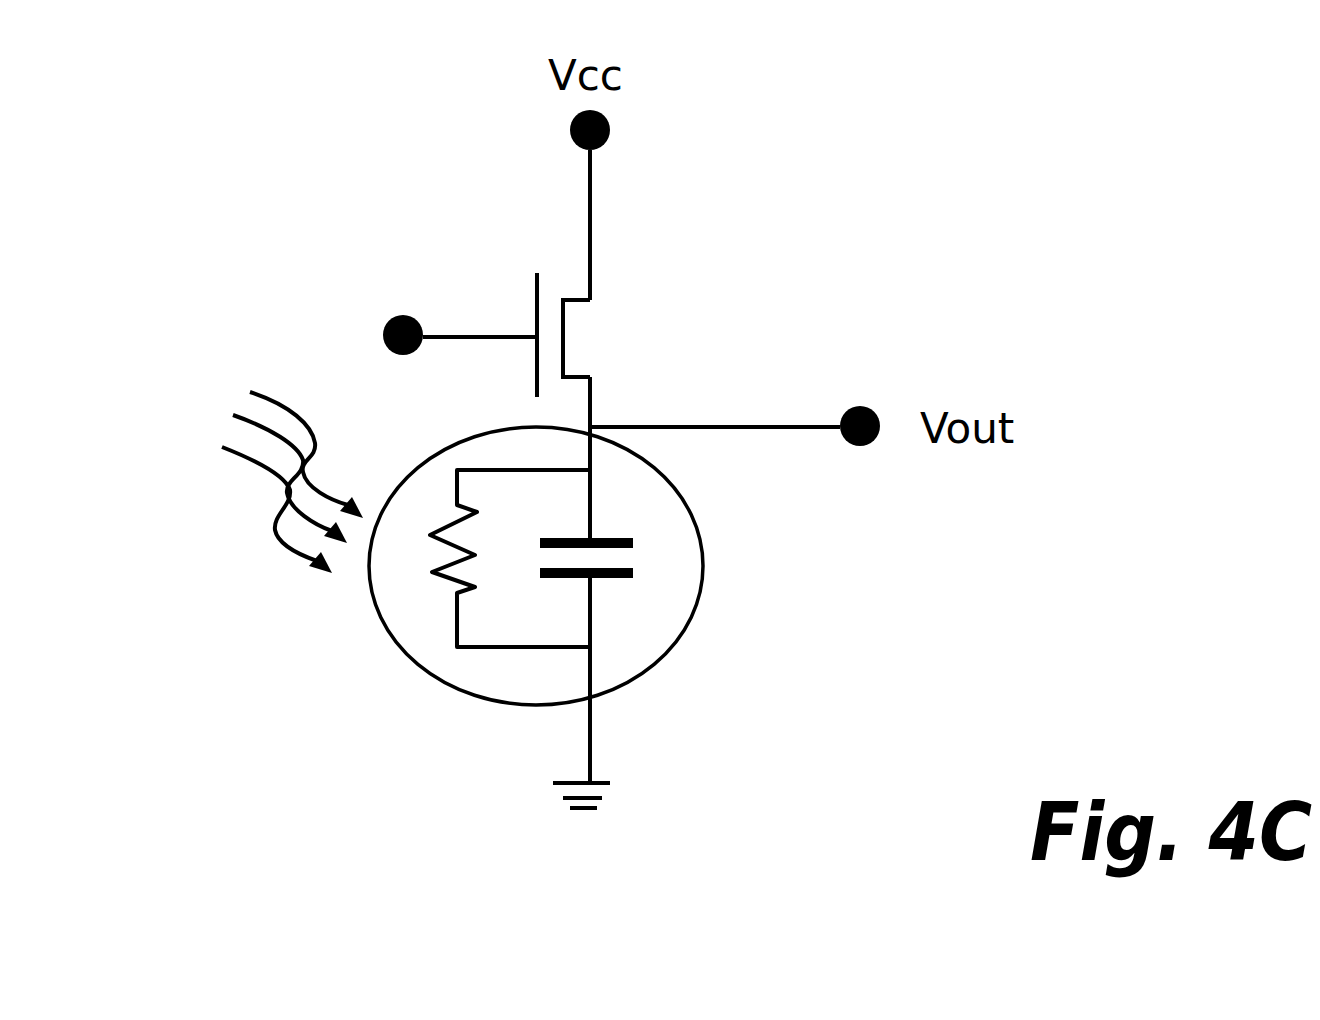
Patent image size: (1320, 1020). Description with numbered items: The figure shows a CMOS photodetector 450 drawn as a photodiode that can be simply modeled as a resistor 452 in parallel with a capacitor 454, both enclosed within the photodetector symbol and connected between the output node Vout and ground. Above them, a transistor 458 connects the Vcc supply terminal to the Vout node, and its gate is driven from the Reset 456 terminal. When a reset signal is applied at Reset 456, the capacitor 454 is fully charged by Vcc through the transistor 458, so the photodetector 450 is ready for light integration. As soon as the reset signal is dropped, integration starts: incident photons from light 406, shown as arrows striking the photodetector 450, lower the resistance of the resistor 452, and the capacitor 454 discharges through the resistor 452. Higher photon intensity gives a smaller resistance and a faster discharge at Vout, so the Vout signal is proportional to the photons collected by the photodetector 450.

The light 406 is at (256, 478).
The photodetector 450 is at (650, 650).
The resistor 452 is at (437, 590).
The capacitor 454 is at (643, 552).
The Reset 456 is at (373, 340).
The transistor 458 is at (587, 335).